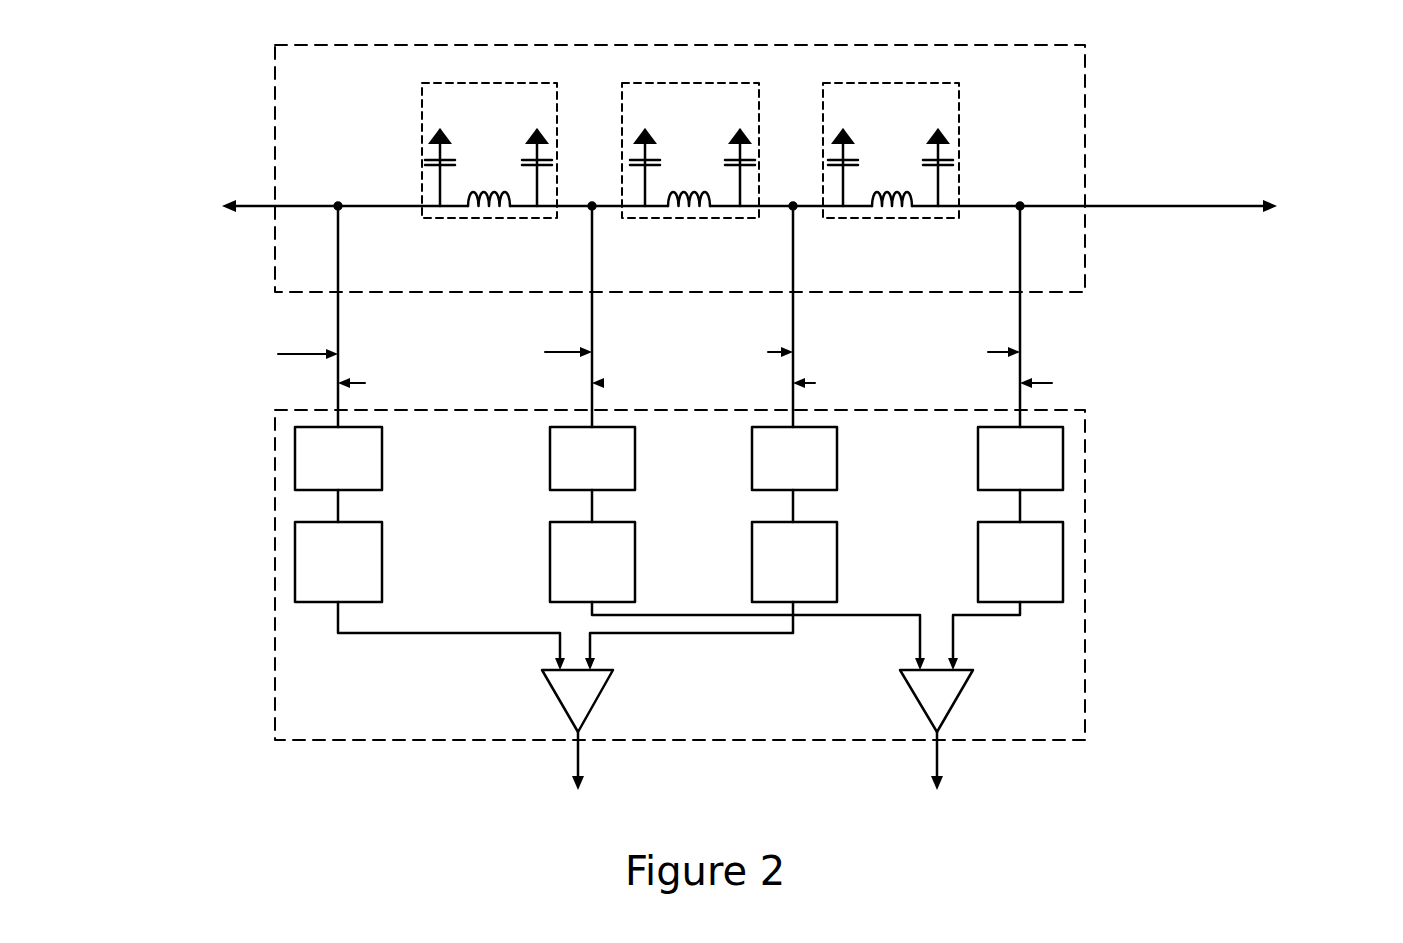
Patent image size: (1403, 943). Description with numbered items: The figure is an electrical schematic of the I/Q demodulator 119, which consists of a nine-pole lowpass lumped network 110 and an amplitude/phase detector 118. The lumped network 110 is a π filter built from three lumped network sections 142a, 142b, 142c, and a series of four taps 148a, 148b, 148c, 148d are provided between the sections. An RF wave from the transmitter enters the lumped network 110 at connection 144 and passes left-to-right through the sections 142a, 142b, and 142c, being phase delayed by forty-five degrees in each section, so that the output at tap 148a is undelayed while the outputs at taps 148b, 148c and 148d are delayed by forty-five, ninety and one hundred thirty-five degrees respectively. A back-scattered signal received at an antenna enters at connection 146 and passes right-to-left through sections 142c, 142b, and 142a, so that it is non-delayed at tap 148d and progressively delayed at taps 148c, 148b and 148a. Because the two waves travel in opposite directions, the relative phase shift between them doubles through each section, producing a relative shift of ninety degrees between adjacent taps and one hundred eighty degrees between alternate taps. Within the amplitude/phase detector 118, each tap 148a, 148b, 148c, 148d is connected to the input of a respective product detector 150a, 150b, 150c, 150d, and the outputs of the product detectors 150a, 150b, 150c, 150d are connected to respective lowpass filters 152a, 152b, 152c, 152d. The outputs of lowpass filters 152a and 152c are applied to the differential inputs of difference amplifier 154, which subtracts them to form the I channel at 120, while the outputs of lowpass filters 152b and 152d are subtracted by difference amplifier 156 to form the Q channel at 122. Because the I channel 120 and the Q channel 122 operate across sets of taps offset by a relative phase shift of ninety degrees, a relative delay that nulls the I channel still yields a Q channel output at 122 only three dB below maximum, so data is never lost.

The nine-pole lowpass lumped network 110 is at (1085, 62).
The amplitude/phase detector 118 is at (1085, 652).
The I/Q demodulator 119 is at (1150, 158).
The I channel 120 is at (580, 762).
The Q channel 122 is at (937, 762).
The lumped network section 142a is at (422, 121).
The lumped network section 142b is at (700, 83).
The lumped network section 142c is at (960, 108).
The connection 144 is at (262, 204).
The connection 146 is at (1185, 208).
The tap 148a is at (338, 243).
The tap 148b is at (592, 235).
The tap 148c is at (793, 238).
The tap 148d is at (1020, 232).
The product detector 150a is at (298, 452).
The product detector 150b is at (558, 475).
The product detector 150c is at (764, 465).
The product detector 150d is at (1045, 443).
The lowpass filter 152a is at (300, 542).
The lowpass filter 152b is at (557, 540).
The lowpass filter 152c is at (760, 540).
The lowpass filter 152d is at (1055, 543).
The difference amplifier 154 is at (570, 700).
The difference amplifier 156 is at (940, 700).